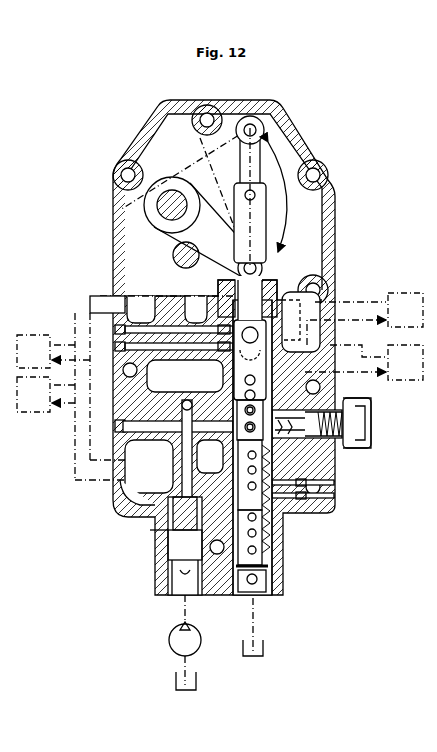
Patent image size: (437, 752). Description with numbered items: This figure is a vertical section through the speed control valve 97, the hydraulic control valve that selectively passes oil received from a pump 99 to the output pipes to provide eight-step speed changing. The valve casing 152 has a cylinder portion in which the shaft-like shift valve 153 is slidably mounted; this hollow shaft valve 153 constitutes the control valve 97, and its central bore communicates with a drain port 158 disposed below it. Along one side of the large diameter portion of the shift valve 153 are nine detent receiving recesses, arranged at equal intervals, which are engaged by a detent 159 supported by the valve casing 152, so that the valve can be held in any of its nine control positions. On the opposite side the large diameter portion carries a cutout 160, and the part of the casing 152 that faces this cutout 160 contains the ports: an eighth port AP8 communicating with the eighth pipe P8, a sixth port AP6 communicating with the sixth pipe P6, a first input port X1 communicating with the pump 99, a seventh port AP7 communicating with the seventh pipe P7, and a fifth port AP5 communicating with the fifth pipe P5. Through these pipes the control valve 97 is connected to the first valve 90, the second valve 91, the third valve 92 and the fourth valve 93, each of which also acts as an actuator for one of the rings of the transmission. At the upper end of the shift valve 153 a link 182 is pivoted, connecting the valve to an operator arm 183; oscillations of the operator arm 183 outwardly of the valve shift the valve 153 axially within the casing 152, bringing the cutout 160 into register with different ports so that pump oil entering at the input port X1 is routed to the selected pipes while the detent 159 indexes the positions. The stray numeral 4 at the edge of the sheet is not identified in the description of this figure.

The valve casing 152 is at (328, 170).
The operator arm 183 is at (112, 207).
The link 182 is at (283, 292).
The speed control valve 97 is at (365, 232).
The shift valve 153 is at (270, 568).
The detent 159 is at (300, 445).
The cutout 160 is at (168, 560).
The drain port 158 is at (275, 598).
The pump 99 is at (168, 647).
The first valve 90 is at (364, 362).
The second valve 91 is at (365, 319).
The third valve 92 is at (46, 394).
The fourth valve 93 is at (53, 351).
The fifth pipe P5 is at (75, 482).
The sixth pipe P6 is at (90, 310).
The seventh pipe P7 is at (90, 458).
The eighth pipe P8 is at (96, 292).
The fifth port AP5 is at (150, 537).
The sixth port AP6 is at (137, 293).
The seventh port AP7 is at (182, 500).
The eighth port AP8 is at (186, 302).
The first input port X1 is at (212, 400).
The partial numeral 4 is at (4, 548).